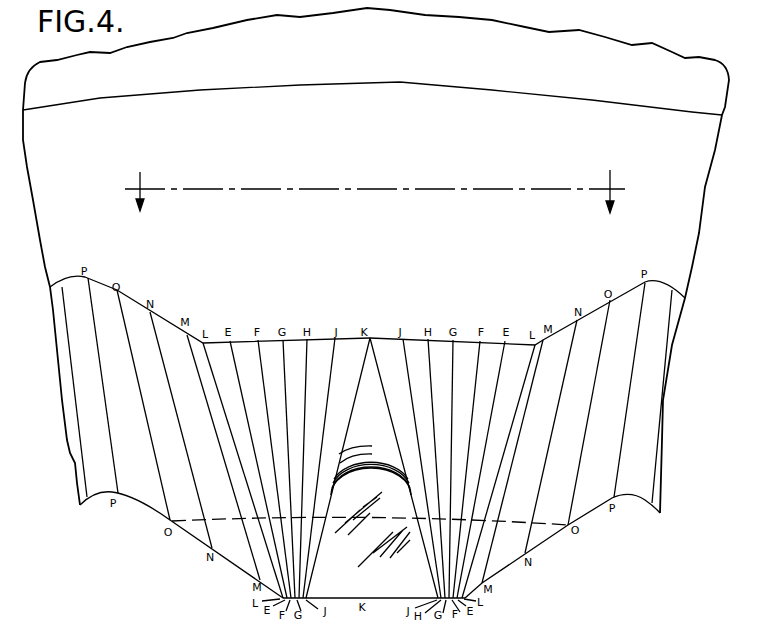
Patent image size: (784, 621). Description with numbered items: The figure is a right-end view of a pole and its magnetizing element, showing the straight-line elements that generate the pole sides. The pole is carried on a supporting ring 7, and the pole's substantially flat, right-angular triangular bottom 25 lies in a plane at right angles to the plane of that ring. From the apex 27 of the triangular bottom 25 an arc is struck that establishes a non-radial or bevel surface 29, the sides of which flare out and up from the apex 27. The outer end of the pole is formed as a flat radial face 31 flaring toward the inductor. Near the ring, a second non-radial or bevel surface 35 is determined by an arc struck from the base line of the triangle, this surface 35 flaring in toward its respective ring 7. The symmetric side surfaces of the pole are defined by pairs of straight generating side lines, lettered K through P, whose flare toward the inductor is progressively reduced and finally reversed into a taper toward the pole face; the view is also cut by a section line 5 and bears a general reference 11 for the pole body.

The section line 5- 5 is at (374, 191).
The supporting ring 7 is at (363, 97).
The lower edge portion 11 is at (502, 573).
The triangular bottom 25 is at (449, 338).
The apex of triangle 27 is at (374, 338).
The bevel surface 29 is at (371, 470).
The flat radial face 31 is at (390, 583).
The bevel surface 35 is at (331, 609).